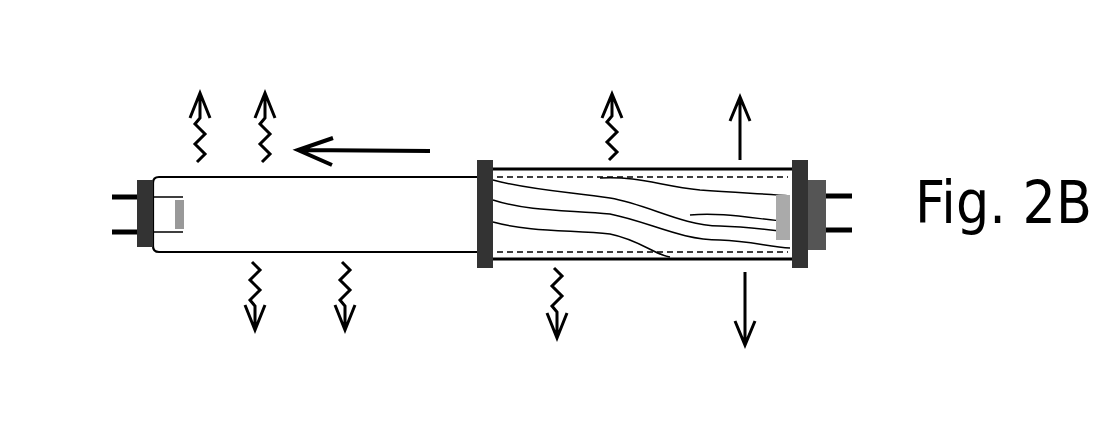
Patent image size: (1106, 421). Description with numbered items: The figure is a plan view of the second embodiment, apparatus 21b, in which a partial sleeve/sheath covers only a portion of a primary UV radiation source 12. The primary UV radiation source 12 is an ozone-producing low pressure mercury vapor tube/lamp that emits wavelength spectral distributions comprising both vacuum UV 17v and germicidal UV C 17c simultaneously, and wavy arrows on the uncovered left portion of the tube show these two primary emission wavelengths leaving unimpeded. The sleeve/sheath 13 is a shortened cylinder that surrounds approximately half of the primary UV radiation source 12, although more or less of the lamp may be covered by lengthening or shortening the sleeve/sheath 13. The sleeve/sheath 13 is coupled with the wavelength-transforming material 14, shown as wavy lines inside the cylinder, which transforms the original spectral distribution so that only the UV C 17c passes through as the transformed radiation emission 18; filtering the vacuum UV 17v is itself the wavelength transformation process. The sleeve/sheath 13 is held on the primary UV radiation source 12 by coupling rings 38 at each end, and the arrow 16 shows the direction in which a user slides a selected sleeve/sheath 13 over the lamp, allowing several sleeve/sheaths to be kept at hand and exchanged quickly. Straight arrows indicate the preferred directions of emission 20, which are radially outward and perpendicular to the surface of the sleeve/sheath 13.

The primary UV radiation source 12 is at (212, 262).
The sleeve/sheath 13 is at (525, 158).
The wavelength-transforming material 14 is at (683, 228).
The arrow 16 is at (364, 138).
The vacuum UV 17v is at (228, 212).
The germicidal UV C 17c is at (310, 212).
The transformed radiation emission 18 is at (584, 217).
The preferred directions of emission 20 is at (743, 221).
The coupling rings 38 is at (486, 275).
The apparatus 21b is at (848, 253).